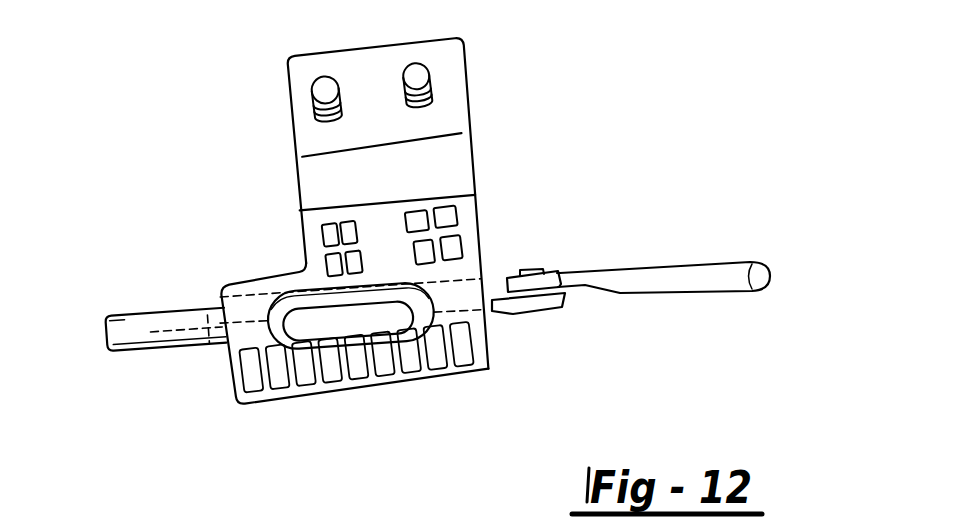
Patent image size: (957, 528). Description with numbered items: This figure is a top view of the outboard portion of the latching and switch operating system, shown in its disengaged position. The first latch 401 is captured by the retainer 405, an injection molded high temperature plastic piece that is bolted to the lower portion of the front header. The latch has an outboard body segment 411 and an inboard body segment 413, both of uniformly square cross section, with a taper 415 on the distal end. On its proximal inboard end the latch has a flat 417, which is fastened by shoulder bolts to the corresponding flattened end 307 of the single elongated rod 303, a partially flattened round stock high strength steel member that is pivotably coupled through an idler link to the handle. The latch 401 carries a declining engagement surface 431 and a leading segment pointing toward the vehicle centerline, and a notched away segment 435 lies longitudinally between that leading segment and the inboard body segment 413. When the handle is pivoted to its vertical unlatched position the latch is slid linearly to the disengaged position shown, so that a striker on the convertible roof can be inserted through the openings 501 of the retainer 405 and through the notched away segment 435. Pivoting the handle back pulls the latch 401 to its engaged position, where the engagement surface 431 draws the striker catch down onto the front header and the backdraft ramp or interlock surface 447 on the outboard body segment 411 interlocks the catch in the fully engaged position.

The first latch 401 is at (121, 304).
The declining engagement surface 431 is at (254, 318).
The retainer 405 is at (234, 407).
The notched away segment 435 is at (337, 314).
The openings 501 is at (378, 328).
The taper 415 is at (107, 352).
The outboard body segment 411 is at (150, 350).
The backdraft ramp or interlock surface 447 is at (213, 347).
The elongated rod 303 is at (733, 261).
The inboard body segment 413 is at (503, 275).
The flattened end 307 is at (553, 278).
The flat 417 is at (558, 293).